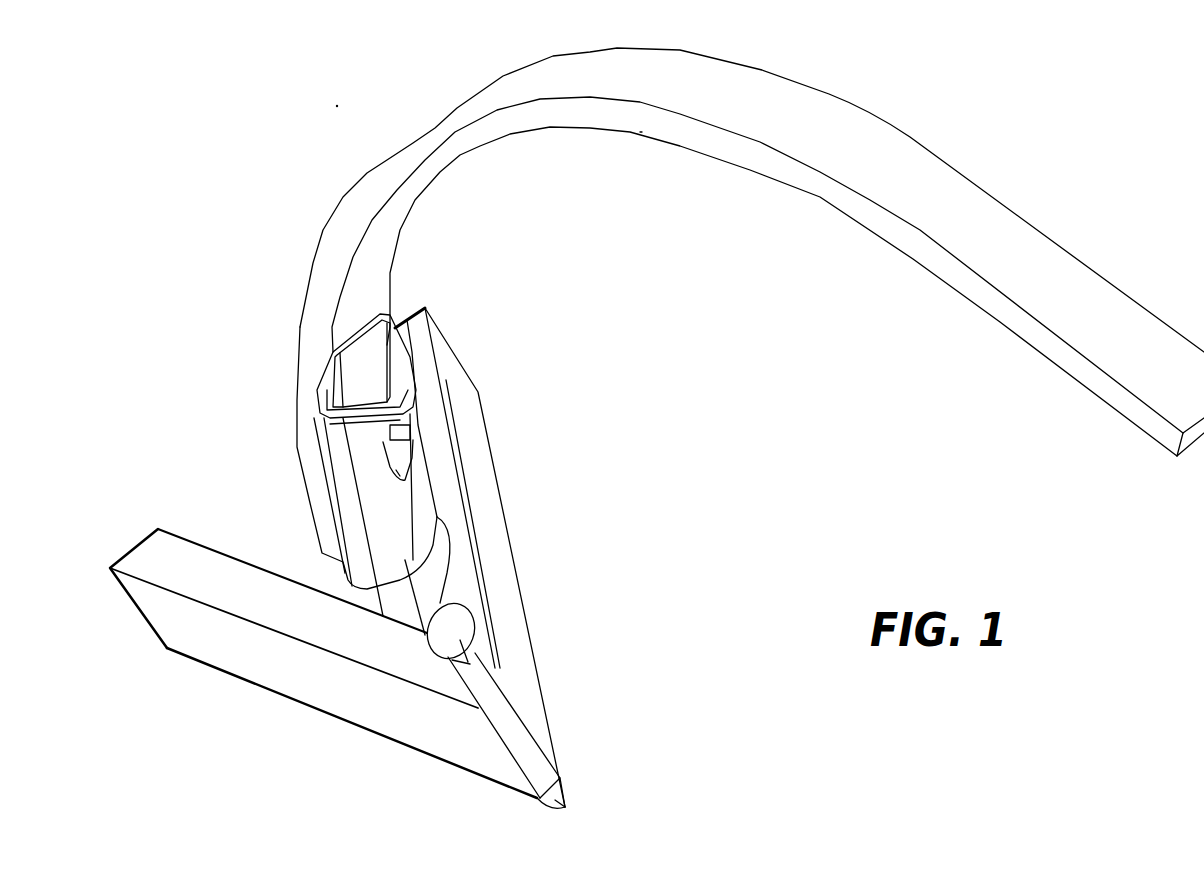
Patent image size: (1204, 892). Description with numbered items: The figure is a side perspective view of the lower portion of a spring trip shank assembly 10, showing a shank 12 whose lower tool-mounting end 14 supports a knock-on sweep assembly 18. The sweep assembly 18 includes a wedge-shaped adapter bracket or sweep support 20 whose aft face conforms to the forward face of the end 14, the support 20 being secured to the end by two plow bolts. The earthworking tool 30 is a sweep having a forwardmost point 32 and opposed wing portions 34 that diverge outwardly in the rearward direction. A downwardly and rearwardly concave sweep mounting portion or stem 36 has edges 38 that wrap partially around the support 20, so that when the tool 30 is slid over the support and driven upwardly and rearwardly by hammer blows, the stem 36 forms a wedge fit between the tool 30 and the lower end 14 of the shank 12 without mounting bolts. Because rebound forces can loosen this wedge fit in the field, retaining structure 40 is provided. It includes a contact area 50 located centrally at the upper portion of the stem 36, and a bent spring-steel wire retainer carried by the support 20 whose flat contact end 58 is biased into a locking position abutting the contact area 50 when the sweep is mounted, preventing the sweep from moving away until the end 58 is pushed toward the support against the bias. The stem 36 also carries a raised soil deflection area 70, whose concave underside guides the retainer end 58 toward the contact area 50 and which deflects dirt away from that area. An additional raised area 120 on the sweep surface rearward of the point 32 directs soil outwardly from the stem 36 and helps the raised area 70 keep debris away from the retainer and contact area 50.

The spring trip shank assembly 10 is at (285, 100).
The shank 12 is at (537, 70).
The lower tool-mounting end 14 is at (307, 493).
The knock-on sweep assembly 18 is at (680, 447).
The sweep support 20 is at (368, 317).
The earthworking tool 30 is at (565, 610).
The point 32 is at (560, 808).
The wing portions 34 is at (508, 548).
The sweep mounting portion 36 is at (412, 496).
The edges 38 is at (315, 405).
The retaining structure 40 is at (427, 385).
The contact area 50 is at (332, 424).
The contact end 58 is at (387, 438).
The raised soil deflection area 70 is at (398, 473).
The additional raised area 120 is at (457, 620).